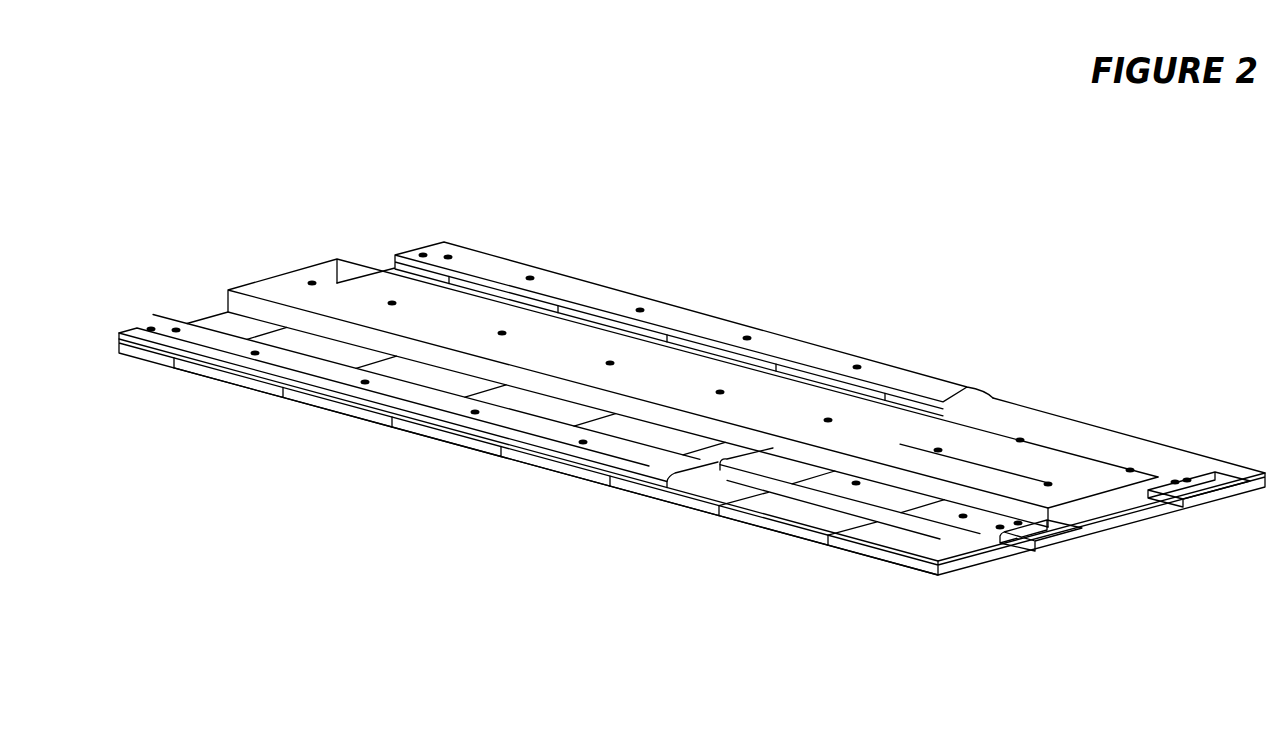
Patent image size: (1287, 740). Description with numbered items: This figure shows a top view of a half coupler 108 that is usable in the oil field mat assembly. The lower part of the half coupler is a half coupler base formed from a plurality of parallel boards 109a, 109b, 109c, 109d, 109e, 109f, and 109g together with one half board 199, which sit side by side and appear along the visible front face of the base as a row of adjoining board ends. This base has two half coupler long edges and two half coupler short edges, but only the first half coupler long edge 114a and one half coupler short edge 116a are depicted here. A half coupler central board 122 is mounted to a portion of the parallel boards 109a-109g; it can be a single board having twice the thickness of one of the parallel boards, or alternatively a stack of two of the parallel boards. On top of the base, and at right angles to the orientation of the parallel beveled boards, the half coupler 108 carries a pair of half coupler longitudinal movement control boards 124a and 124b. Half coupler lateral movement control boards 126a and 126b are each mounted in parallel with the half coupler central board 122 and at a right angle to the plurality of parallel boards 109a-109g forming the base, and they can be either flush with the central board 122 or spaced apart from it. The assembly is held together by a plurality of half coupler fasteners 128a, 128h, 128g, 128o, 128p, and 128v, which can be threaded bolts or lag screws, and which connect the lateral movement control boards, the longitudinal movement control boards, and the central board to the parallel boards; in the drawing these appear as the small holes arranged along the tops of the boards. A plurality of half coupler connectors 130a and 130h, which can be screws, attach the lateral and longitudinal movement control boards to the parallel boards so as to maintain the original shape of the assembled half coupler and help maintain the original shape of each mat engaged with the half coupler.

The half coupler 108 is at (974, 188).
The half board 199 is at (142, 355).
The half coupler short edge 116a is at (1090, 540).
The half coupler longitudinal movement control board 124a is at (205, 335).
The half coupler longitudinal movement control board 124b is at (692, 315).
The half coupler central board 122 is at (1113, 507).
The half coupler long edge 114a is at (270, 405).
The parallel board 109a is at (882, 552).
The parallel board 109b is at (774, 524).
The parallel board 109c is at (668, 495).
The parallel board 109d is at (560, 468).
The parallel board 109e is at (450, 440).
The parallel board 109f is at (343, 410).
The parallel board 109g is at (227, 383).
The half coupler lateral movement control board 126a is at (1025, 538).
The half coupler lateral movement control board 126b is at (1190, 489).
The half coupler connector 130a is at (148, 326).
The half coupler connector 130h is at (1186, 477).
The half coupler fastener 128a is at (175, 328).
The half coupler fastener 128g is at (968, 512).
The half coupler fastener 128h is at (311, 279).
The half coupler fastener 128o is at (1048, 481).
The half coupler fastener 128p is at (449, 254).
The half coupler fastener 128v is at (1132, 467).